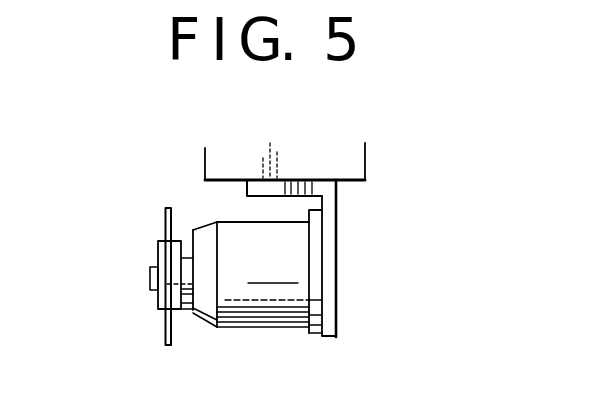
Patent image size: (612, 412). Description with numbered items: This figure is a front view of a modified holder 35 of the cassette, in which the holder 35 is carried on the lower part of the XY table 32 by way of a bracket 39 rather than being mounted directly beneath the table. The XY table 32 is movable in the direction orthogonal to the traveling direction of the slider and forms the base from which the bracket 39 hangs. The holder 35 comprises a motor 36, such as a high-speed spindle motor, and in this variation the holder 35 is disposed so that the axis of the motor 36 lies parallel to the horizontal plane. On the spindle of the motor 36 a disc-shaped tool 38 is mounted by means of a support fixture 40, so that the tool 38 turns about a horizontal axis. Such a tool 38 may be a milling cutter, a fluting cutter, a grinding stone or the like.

The XY table 32 is at (352, 158).
The holder 35 is at (246, 292).
The motor 36 is at (247, 318).
The disc-shaped tool 38 is at (167, 223).
The bracket 39 is at (335, 247).
The support fixture 40 is at (183, 309).